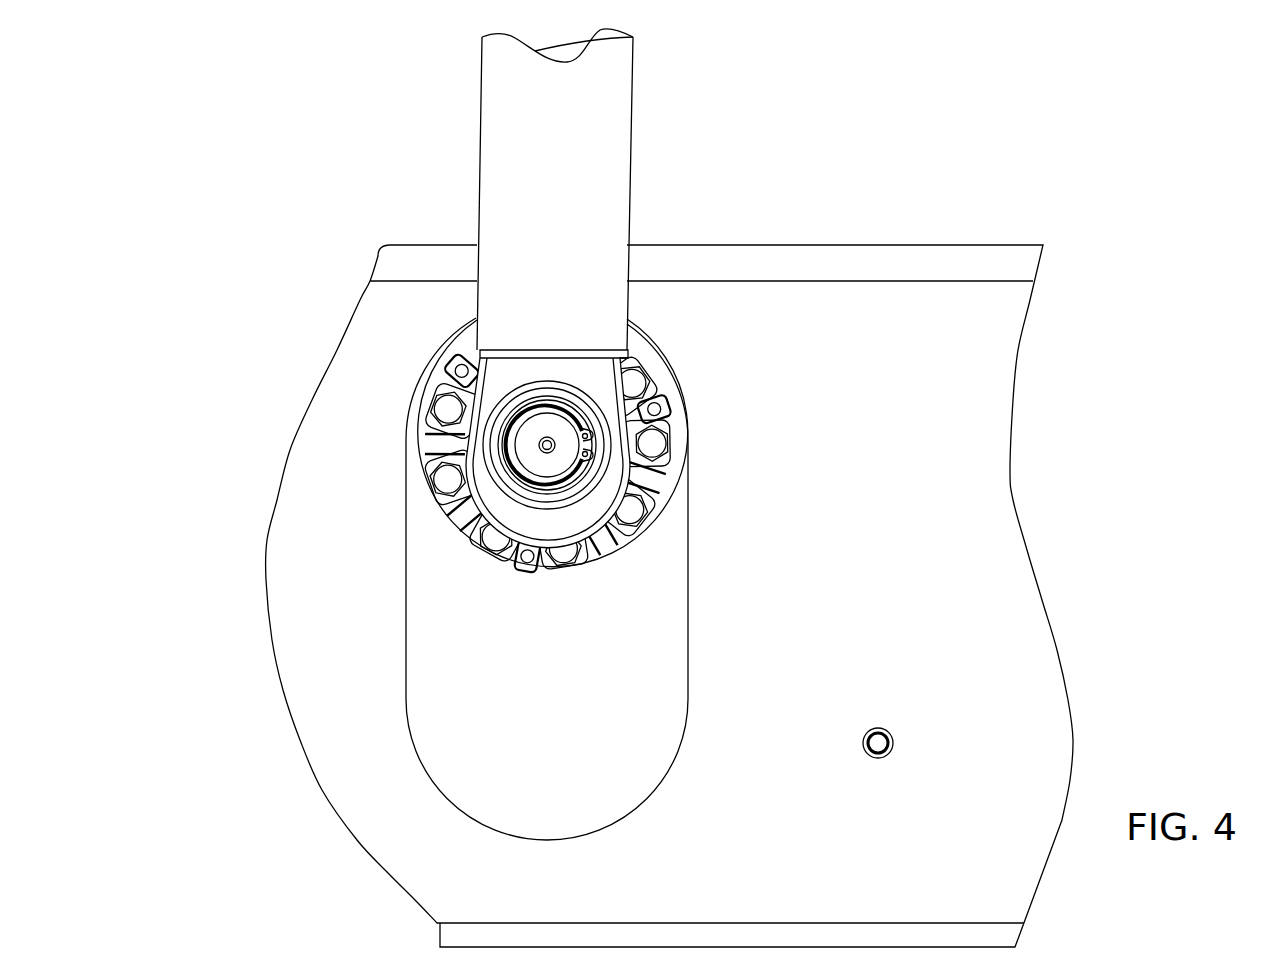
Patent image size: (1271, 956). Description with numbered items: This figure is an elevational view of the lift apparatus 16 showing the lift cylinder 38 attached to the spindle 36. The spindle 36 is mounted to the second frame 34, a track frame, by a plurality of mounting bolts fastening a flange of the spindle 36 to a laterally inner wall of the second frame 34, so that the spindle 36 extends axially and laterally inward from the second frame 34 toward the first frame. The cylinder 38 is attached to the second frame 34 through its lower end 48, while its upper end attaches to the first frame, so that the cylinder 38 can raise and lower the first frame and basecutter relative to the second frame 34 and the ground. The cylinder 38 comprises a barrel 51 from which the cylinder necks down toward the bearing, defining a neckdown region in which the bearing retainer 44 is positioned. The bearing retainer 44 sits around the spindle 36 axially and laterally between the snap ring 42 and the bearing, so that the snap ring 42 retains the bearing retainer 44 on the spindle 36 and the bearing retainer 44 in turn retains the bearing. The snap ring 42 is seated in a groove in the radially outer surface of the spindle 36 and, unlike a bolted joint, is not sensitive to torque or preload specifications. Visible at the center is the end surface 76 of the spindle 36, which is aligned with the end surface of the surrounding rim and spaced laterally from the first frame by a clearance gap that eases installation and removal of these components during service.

The lift apparatus 16 is at (789, 362).
The second frame 34 is at (789, 316).
The lift cylinder 38 is at (582, 110).
The barrel 51 is at (600, 166).
The lower end 48 is at (592, 385).
The bearing retainer 44 is at (525, 505).
The snap ring 42 is at (572, 478).
The spindle 36 is at (537, 458).
The end surface 76 is at (553, 428).